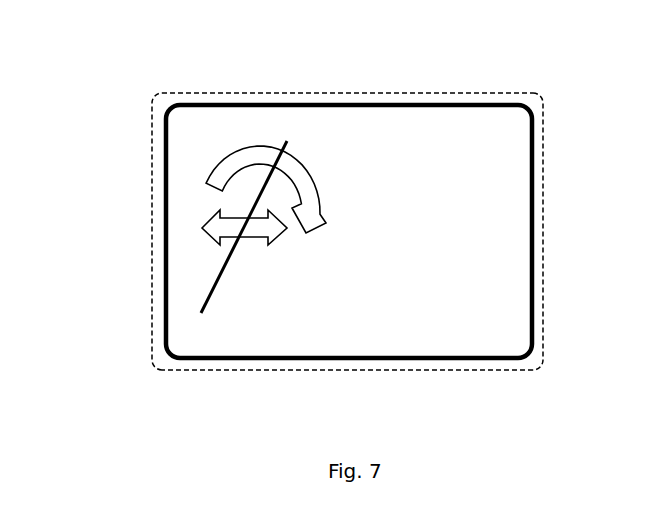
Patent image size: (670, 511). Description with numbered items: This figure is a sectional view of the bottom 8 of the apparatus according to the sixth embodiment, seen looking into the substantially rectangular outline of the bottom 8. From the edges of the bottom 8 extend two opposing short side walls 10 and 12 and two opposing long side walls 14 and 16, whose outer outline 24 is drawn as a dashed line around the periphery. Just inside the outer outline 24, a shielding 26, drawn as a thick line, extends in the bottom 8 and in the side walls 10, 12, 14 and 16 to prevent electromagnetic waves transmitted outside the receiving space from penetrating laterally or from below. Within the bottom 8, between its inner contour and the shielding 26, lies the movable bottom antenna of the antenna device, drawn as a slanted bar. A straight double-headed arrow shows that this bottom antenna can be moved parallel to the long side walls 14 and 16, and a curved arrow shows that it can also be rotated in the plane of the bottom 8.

The bottom 8 is at (340, 162).
The short side wall 10 is at (323, 222).
The short side wall 12 is at (557, 226).
The long side wall 14 is at (340, 377).
The long side wall 16 is at (327, 66).
The outer outline 24 is at (338, 222).
The shielding 26 is at (166, 167).